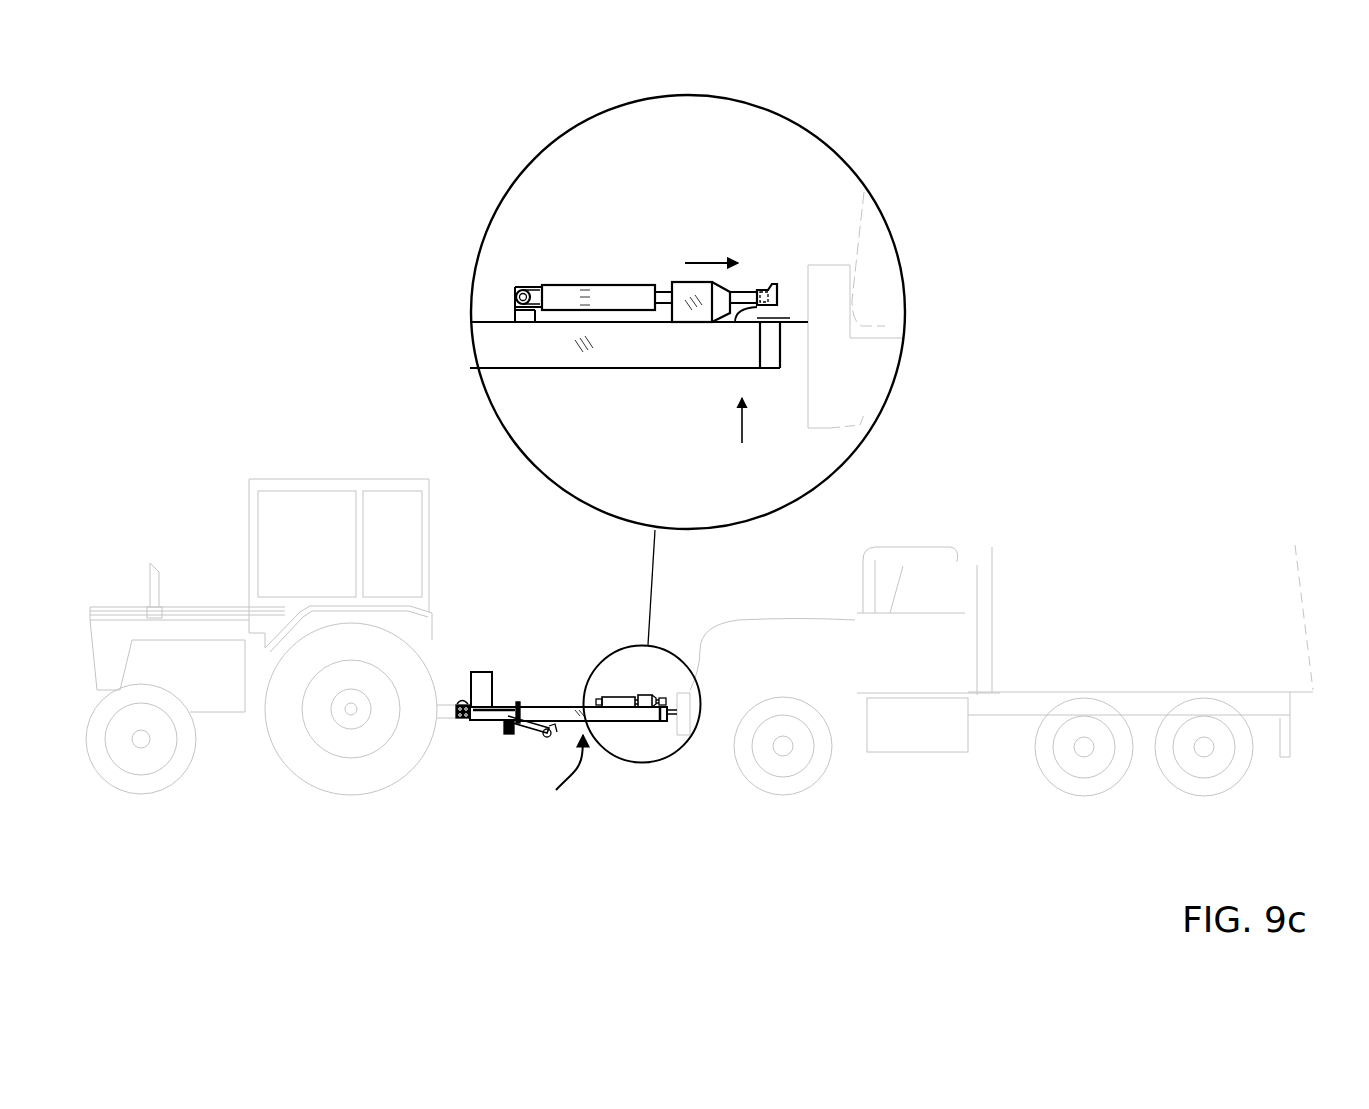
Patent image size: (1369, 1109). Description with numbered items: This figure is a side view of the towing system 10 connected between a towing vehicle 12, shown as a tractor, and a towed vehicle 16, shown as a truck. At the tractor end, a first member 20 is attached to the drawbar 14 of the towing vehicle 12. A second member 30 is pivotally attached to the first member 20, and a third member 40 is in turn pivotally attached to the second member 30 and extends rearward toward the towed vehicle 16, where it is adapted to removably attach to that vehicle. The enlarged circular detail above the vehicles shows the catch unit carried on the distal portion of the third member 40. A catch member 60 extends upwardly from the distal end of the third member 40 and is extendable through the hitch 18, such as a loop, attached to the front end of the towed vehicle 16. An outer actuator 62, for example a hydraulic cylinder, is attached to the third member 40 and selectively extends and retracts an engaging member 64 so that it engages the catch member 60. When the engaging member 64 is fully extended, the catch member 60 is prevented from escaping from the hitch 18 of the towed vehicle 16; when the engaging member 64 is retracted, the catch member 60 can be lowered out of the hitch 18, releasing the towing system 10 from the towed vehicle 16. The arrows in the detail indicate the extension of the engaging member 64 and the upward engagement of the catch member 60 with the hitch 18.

The towing system 10 is at (623, 596).
The towing vehicle 12 is at (320, 468).
The drawbar 14 is at (448, 700).
The towed vehicle 16 is at (952, 536).
The hitch 18 is at (663, 700).
The first member 20 is at (470, 722).
The second member 30 is at (497, 725).
The third member 40 is at (562, 705).
The catch member 60 is at (777, 290).
The outer actuator 62 is at (583, 285).
The engaging member 64 is at (752, 292).